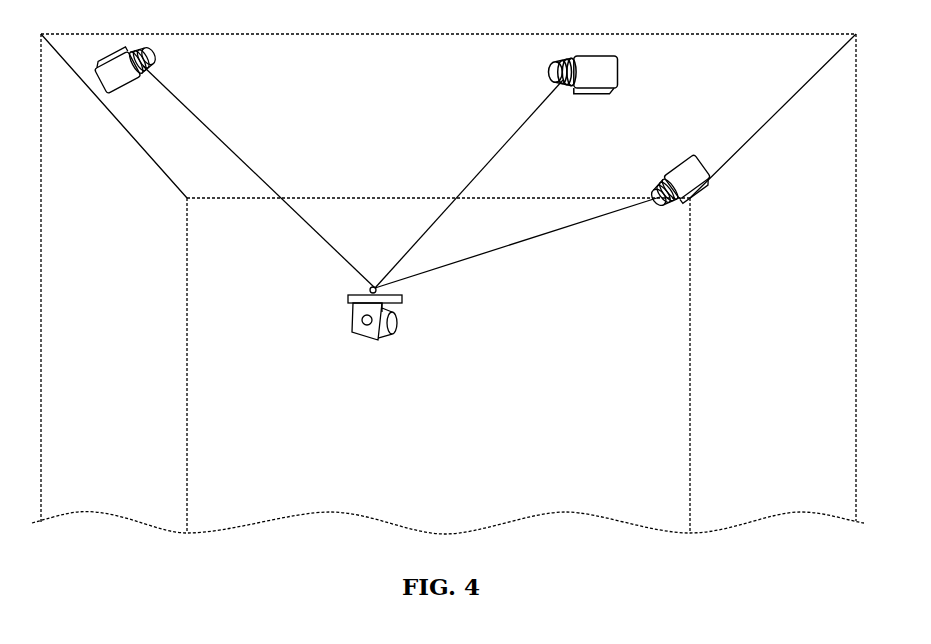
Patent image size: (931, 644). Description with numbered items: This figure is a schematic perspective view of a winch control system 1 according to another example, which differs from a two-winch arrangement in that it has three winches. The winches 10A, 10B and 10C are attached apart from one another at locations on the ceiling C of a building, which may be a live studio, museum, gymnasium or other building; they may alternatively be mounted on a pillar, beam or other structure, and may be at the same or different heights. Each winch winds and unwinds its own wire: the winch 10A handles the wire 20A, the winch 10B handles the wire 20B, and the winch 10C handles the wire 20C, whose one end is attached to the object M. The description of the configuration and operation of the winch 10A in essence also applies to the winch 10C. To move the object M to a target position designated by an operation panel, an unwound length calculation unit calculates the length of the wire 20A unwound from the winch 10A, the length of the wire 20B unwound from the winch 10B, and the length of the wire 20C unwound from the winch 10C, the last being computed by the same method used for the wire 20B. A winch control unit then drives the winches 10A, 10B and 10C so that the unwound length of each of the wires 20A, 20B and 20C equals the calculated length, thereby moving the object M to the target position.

The winch control system 1 is at (288, 373).
The ceiling C is at (742, 85).
The winch 10A is at (104, 99).
The winch 10B is at (690, 193).
The winch 10C is at (549, 63).
The wire 20A is at (300, 222).
The wire 20B is at (516, 246).
The wire 20C is at (492, 157).
The object M is at (378, 345).